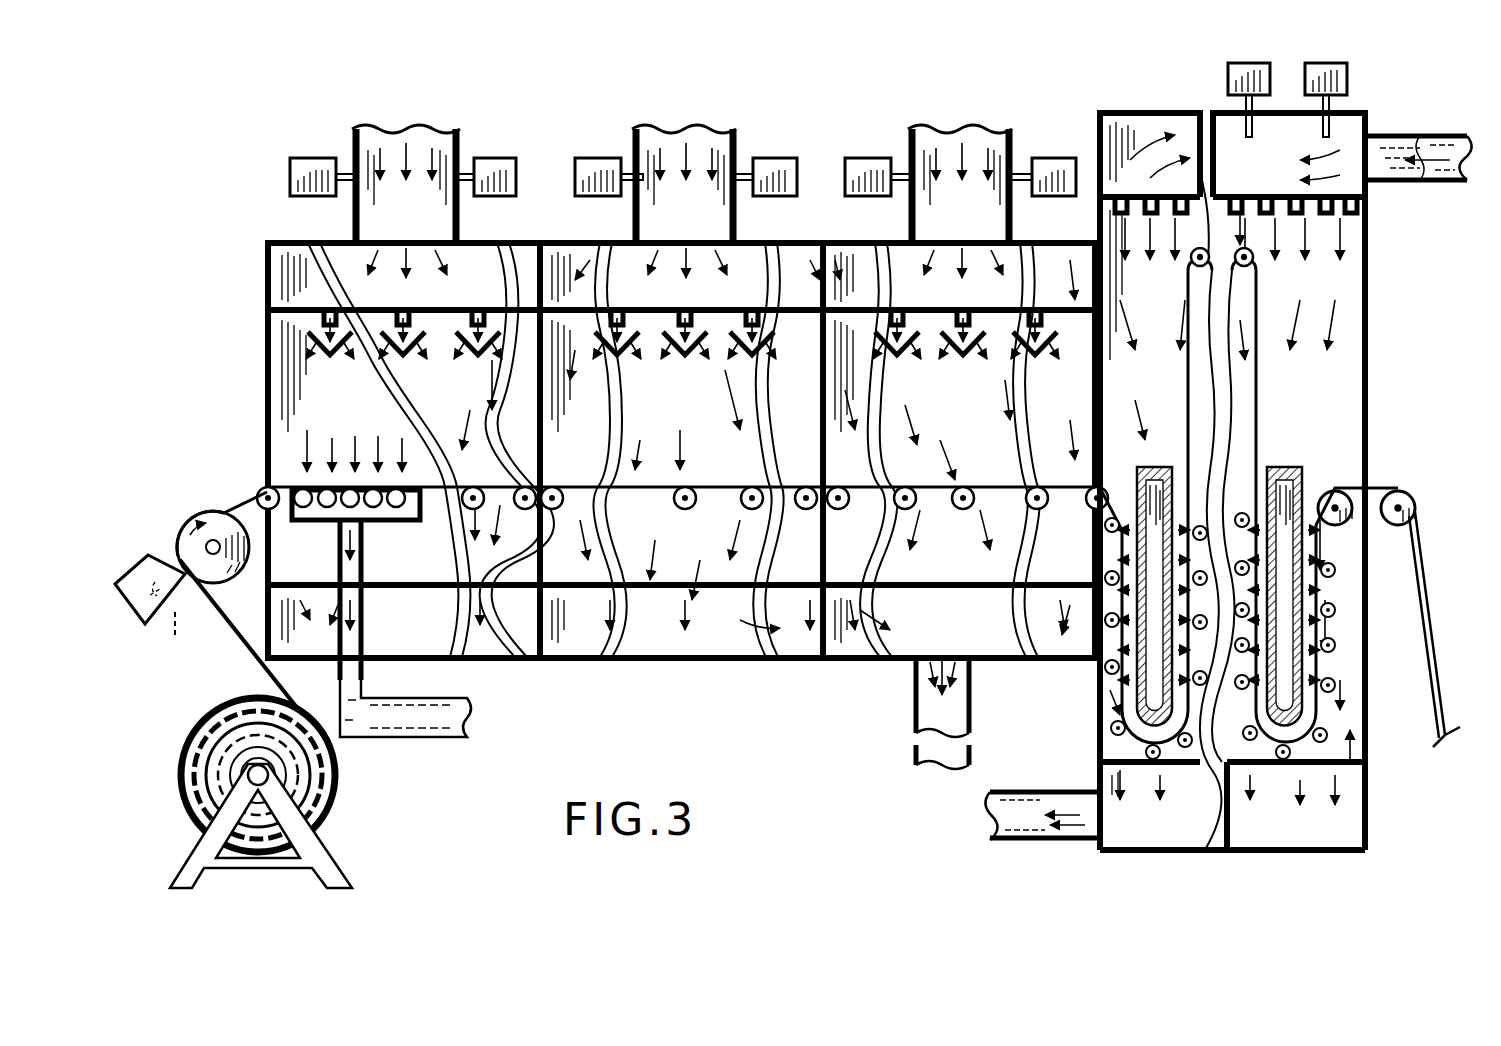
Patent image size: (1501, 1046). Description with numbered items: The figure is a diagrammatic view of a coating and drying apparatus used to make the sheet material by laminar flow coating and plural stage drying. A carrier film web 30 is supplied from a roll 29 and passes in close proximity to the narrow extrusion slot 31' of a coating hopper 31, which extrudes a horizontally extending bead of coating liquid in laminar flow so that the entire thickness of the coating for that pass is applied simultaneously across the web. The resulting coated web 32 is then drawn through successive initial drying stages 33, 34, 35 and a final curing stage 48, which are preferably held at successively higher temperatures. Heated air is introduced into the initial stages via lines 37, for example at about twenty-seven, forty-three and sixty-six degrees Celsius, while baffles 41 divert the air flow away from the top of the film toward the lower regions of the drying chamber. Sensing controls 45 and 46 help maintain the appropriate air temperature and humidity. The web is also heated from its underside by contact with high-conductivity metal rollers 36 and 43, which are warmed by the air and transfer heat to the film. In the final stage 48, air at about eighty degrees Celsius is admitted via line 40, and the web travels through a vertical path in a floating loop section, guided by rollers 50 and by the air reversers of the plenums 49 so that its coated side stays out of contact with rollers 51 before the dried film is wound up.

The roll 29 is at (350, 802).
The carrier film web 30 is at (266, 662).
The coating hopper 31 is at (145, 576).
The narrow extrusion slot 31' is at (186, 636).
The coated web 32 is at (220, 485).
The initial drying stage 33 is at (384, 440).
The initial drying stage 34 is at (710, 442).
The initial drying stage 35 is at (988, 440).
The metal rollers 36 is at (325, 518).
The lines 37 is at (367, 133).
The line 40 is at (1408, 135).
The baffles 41 is at (358, 352).
The metal rollers 43 is at (478, 508).
The sensing control 45 is at (299, 162).
The sensing control 46 is at (500, 158).
The final curing stage 48 is at (1315, 353).
The plenums 49 is at (1153, 466).
The rollers 50 is at (1190, 273).
The rollers 51 is at (1098, 700).